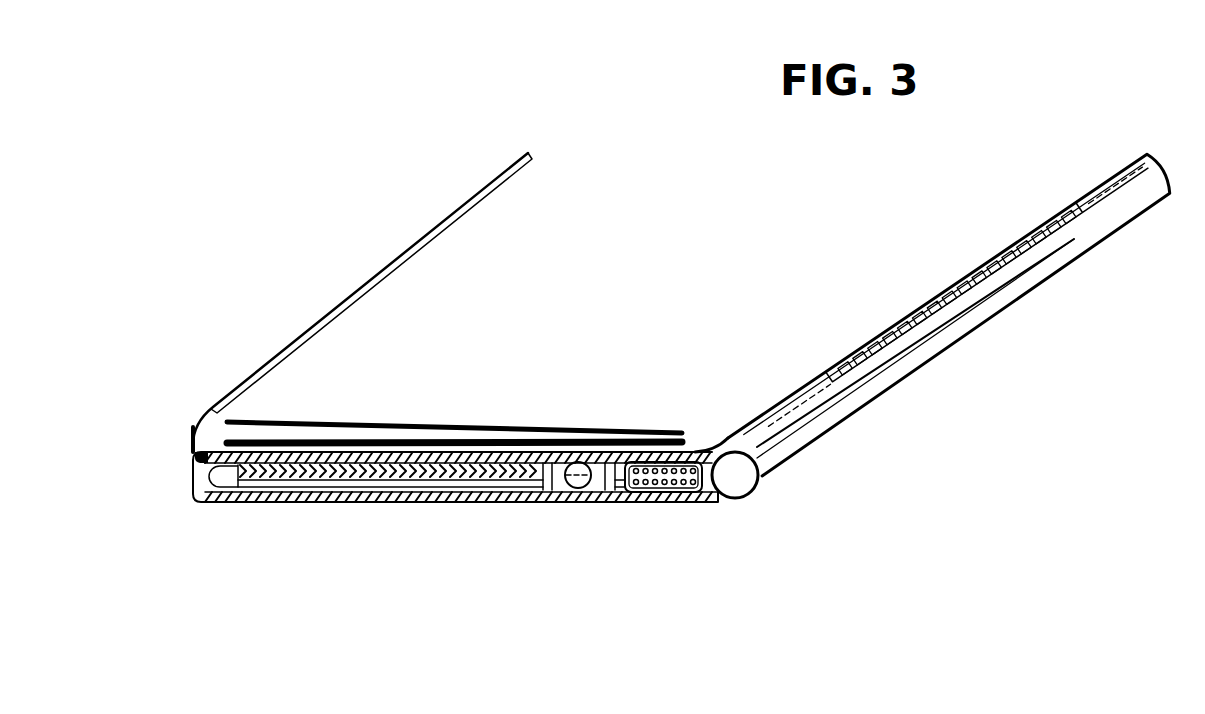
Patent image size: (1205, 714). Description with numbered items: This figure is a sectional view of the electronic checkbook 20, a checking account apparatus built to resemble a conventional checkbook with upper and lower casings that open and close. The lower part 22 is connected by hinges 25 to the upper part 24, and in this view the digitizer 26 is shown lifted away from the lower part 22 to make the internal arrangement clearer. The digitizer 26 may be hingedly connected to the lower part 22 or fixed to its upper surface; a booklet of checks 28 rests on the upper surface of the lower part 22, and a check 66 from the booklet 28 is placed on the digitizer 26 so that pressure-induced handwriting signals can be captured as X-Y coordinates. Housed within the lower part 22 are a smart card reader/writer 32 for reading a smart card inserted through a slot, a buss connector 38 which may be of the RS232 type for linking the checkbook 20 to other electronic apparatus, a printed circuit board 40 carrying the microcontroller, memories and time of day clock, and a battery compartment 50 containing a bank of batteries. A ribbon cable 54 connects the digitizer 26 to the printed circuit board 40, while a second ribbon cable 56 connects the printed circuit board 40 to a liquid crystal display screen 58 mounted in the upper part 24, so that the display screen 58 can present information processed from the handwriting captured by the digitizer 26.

The electronic checkbook 20 is at (668, 577).
The lower part 22 is at (438, 512).
The upper part 24 is at (912, 380).
The hinges 25 is at (747, 480).
The digitizer 26 is at (478, 206).
The booklet of checks 28 is at (626, 428).
The smart card reader/writer 32 is at (272, 472).
The buss connector 38 is at (698, 478).
The printed circuit board 40 is at (344, 487).
The battery compartment 50 is at (578, 490).
The ribbon cable 54 is at (194, 436).
The ribbon cable 56 is at (722, 447).
The liquid crystal display screen 58 is at (1071, 245).
The check 66 is at (328, 421).